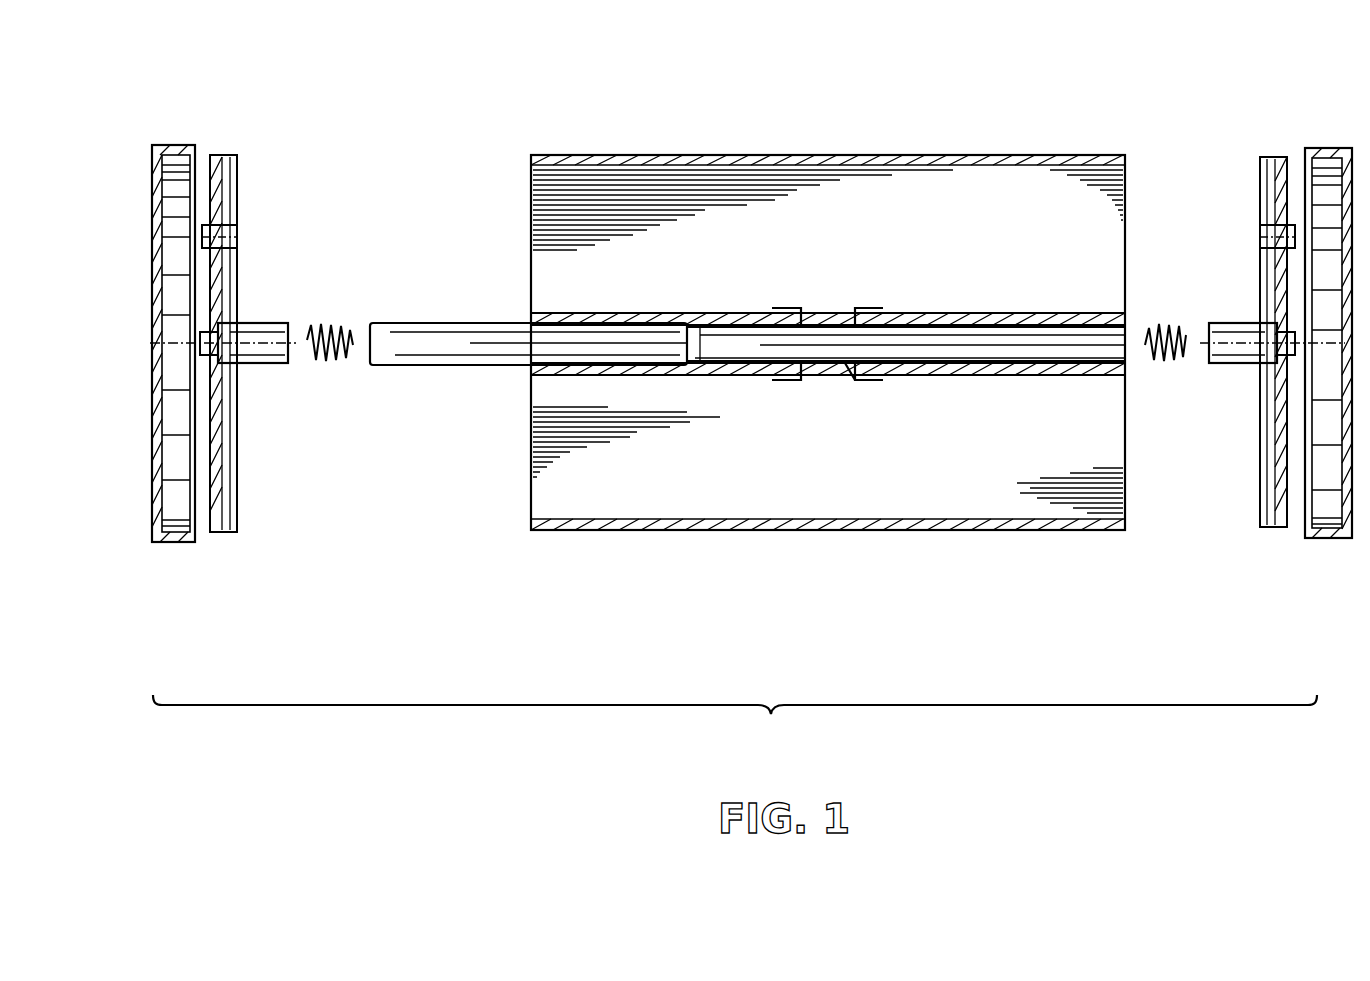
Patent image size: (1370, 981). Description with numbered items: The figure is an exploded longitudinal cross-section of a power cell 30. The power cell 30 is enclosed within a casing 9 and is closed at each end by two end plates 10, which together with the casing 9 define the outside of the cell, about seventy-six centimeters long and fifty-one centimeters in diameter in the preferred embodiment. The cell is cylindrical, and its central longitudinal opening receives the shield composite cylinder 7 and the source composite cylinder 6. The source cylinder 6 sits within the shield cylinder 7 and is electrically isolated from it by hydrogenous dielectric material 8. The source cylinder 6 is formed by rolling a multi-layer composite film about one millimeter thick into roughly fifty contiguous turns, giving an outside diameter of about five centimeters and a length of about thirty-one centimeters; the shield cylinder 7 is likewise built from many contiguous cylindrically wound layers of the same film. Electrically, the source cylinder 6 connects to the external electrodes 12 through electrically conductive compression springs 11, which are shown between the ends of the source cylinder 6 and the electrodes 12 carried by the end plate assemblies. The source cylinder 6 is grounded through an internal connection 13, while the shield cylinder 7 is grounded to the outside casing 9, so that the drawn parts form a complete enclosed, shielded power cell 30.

The source composite cylinder 6 is at (470, 368).
The shield composite cylinder 7 is at (772, 200).
The hydrogenous dielectric material 8 is at (1062, 380).
The casing 9 is at (812, 532).
The end plate 10 is at (170, 148).
The electrically conductive compression spring 11 is at (332, 360).
The external electrode 12 is at (220, 235).
The internal connection 13 is at (880, 383).
The power cell 30 is at (735, 725).